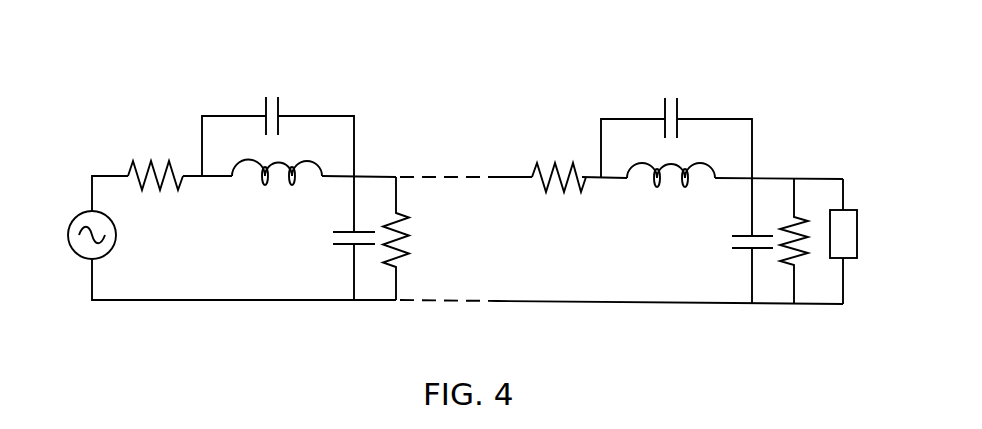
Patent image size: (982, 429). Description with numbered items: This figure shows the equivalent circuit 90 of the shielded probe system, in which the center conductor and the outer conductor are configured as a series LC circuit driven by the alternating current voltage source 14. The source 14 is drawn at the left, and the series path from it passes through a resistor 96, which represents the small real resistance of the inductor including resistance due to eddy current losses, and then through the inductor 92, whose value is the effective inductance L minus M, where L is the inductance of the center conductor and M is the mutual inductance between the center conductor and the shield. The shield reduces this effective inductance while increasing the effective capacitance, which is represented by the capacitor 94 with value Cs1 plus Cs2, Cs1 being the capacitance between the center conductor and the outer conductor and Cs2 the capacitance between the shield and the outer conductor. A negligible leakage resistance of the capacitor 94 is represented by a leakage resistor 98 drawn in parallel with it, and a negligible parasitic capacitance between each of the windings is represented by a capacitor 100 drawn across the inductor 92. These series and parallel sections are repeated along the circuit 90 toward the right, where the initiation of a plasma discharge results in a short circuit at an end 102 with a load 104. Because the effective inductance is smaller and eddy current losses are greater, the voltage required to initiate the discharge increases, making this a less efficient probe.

The alternating current voltage source 14 is at (74, 252).
The equivalent circuit 90 is at (752, 66).
The inductor 92 is at (266, 194).
The capacitor 94 is at (338, 254).
The resistor 96 is at (135, 149).
The leakage resistor 98 is at (416, 227).
The capacitor 100 is at (262, 85).
The end 102 is at (847, 190).
The load 104 is at (858, 232).